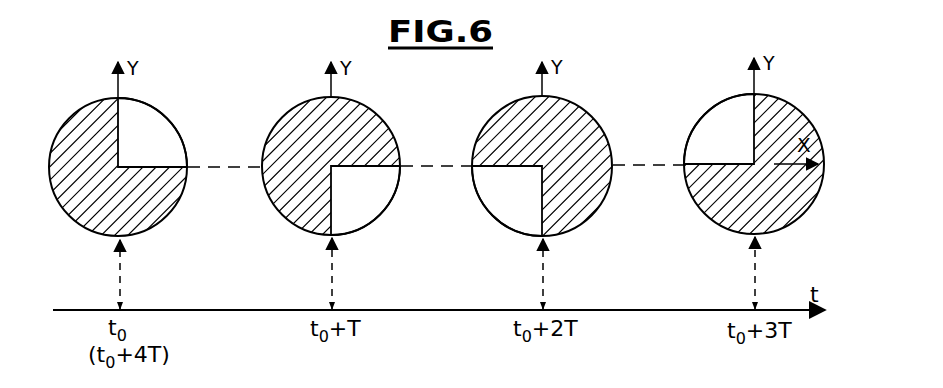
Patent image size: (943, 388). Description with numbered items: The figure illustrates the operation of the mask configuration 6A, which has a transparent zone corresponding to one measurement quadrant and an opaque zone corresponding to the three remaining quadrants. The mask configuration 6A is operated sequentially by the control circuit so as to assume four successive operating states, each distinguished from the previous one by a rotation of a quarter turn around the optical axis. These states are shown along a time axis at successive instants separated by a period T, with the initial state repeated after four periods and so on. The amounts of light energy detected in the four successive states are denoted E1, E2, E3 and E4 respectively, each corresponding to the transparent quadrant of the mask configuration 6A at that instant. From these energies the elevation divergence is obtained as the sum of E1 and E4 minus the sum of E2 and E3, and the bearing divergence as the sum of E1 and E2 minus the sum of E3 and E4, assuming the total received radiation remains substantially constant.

The mask configuration 6A is at (178, 131).
The detected light energy E1 is at (152, 132).
The detected light energy E2 is at (365, 200).
The detected light energy E3 is at (507, 201).
The detected light energy E4 is at (719, 129).